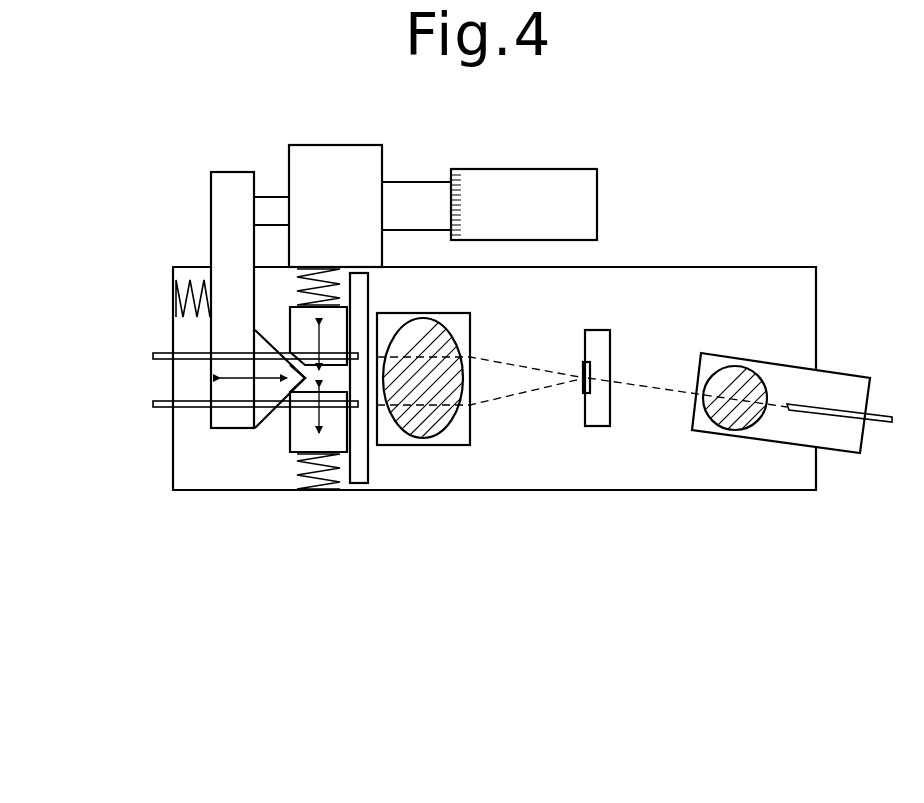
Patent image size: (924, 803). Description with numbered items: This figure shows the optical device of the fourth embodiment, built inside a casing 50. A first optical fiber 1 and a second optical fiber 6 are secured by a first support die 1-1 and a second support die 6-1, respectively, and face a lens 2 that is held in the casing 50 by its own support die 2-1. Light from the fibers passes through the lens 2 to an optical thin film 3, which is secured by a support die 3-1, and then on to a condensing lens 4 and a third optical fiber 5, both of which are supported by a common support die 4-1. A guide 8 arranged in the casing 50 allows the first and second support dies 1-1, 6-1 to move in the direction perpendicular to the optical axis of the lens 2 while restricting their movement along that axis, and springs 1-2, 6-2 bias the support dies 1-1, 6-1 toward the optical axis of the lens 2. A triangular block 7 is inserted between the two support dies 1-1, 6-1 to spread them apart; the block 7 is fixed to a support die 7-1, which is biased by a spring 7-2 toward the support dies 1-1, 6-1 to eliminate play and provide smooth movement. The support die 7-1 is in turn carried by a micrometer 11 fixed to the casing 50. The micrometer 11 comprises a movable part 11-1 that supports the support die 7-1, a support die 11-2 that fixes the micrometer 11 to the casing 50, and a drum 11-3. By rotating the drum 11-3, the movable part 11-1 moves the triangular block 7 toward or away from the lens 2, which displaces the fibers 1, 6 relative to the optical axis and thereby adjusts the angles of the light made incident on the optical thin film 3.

The first optical fiber 1 is at (162, 348).
The first support die 1-1 is at (292, 320).
The spring 1-2 is at (323, 273).
The lens 2 is at (450, 338).
The support die 2-1 is at (453, 445).
The optical thin film 3 is at (582, 385).
The support die 3-1 is at (600, 427).
The condensing lens 4 is at (760, 382).
The support die 4-1 is at (847, 457).
The third optical fiber 5 is at (880, 410).
The second optical fiber 6 is at (168, 408).
The second support die 6-1 is at (293, 437).
The spring 6-2 is at (320, 487).
The triangular block 7 is at (272, 418).
The support die 7-1 is at (218, 195).
The spring 7-2 is at (190, 277).
The guide 8 is at (368, 470).
The micrometer 11 is at (516, 158).
The movable part 11-1 is at (277, 203).
The support die 11-2 is at (352, 152).
The drum 11-3 is at (597, 205).
The casing 50 is at (772, 267).